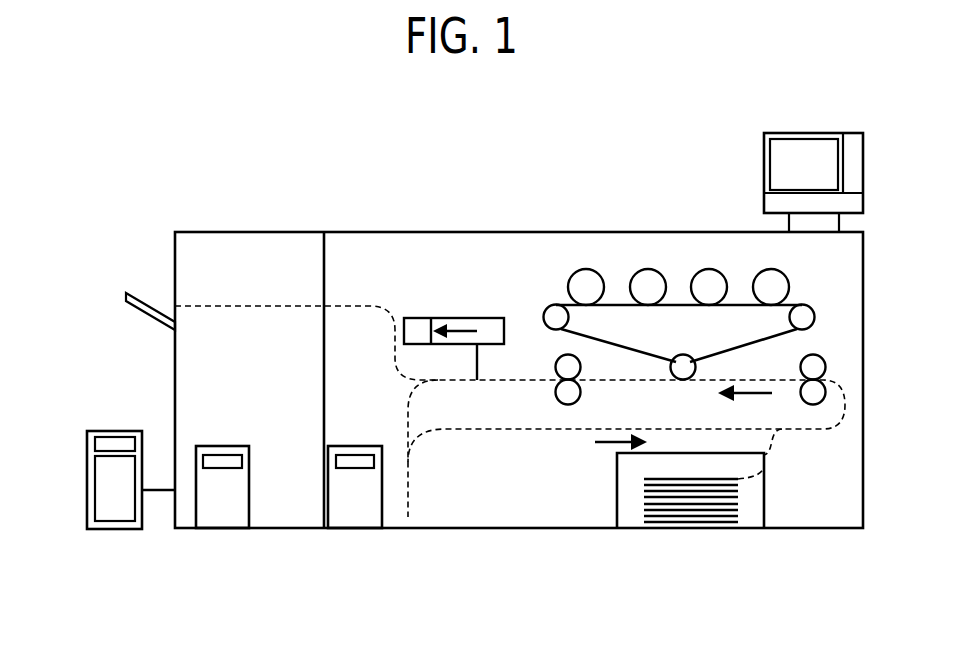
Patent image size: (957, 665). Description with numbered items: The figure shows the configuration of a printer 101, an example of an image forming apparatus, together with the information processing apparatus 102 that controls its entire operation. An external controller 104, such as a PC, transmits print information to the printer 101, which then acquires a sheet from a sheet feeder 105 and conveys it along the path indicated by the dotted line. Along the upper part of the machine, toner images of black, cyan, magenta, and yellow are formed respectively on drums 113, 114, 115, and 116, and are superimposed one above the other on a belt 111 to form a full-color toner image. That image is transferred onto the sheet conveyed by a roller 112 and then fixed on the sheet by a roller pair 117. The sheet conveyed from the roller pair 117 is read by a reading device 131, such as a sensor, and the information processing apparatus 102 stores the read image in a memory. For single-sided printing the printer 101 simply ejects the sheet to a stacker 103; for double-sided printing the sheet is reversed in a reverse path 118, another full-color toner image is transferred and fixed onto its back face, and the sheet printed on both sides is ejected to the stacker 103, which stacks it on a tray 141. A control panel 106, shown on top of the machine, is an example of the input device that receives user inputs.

The printer 101 is at (396, 232).
The information processing apparatus 102 is at (352, 446).
The stacker 103 is at (249, 232).
The external controller 104 is at (97, 431).
The sheet feeder 105 is at (630, 513).
The control panel 106 is at (803, 132).
The belt 111 is at (634, 360).
The roller 112 is at (683, 354).
The drum 113 is at (587, 270).
The drum 114 is at (648, 270).
The drum 115 is at (710, 270).
The drum 116 is at (770, 270).
The roller pair 117 is at (583, 369).
The reverse path 118 is at (410, 495).
The reading device 131 is at (418, 318).
The tray 141 is at (142, 313).